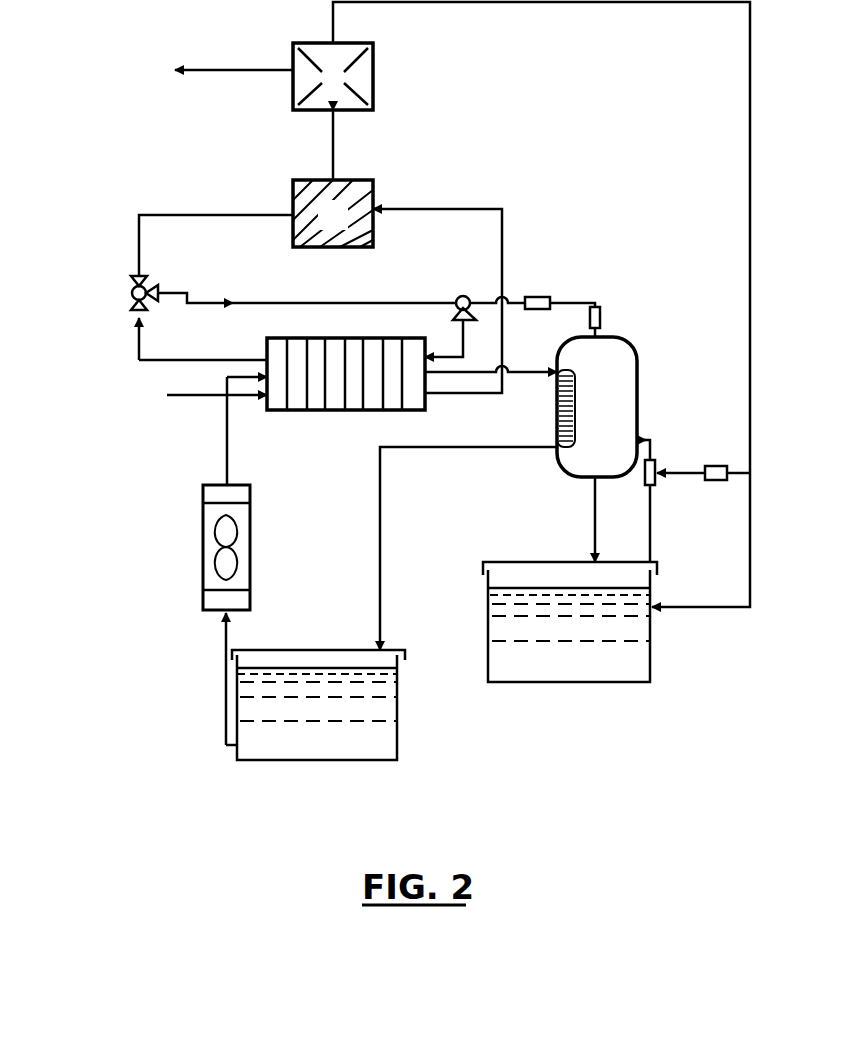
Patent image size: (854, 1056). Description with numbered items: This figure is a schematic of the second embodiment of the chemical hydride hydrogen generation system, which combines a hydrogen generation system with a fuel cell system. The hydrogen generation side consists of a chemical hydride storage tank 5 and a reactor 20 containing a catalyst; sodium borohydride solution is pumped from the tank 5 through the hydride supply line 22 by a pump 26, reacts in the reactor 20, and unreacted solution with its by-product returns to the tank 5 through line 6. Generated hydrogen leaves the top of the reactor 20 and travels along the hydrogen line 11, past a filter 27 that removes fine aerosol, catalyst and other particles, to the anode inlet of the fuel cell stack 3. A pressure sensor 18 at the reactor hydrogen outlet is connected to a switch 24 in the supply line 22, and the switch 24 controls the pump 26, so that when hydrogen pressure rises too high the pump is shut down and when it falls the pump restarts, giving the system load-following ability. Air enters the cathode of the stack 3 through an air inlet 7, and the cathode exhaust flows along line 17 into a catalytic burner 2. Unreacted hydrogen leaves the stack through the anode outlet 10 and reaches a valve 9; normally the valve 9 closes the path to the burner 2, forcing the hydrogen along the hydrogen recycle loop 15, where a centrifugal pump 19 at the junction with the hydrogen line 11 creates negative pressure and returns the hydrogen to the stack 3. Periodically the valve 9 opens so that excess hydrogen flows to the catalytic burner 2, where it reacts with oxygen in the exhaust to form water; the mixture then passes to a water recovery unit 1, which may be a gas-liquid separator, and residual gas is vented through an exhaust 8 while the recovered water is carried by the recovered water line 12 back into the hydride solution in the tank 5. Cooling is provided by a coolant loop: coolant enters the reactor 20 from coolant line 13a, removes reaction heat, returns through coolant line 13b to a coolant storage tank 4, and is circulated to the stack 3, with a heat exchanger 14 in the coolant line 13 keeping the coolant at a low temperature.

The water recovery unit 1 is at (342, 91).
The catalytic burner 2 is at (342, 228).
The fuel cell stack 3 is at (379, 410).
The coolant storage tank 4 is at (322, 760).
The chemical hydride storage tank 5 is at (576, 676).
The line 6 is at (594, 505).
The air inlet 7 is at (167, 397).
The exhaust 8 is at (220, 73).
The valve 9 is at (130, 287).
The anode outlet 10 is at (243, 360).
The hydrogen line 11 is at (130, 357).
The recovered water line 12 is at (752, 557).
The coolant line 13 is at (227, 464).
The coolant line 13a is at (520, 378).
The coolant line 13b is at (380, 484).
The heat exchanger 14 is at (203, 556).
The hydrogen recycle loop 15 is at (326, 303).
The discharged airline 17 is at (455, 208).
The pressure sensor 18 is at (603, 318).
The centrifugal pump 19 is at (463, 295).
The reactor 20 is at (612, 390).
The hydride supply line 22 is at (652, 535).
The switch 24 is at (750, 475).
The pump 26 is at (660, 462).
The filter 27 is at (538, 297).